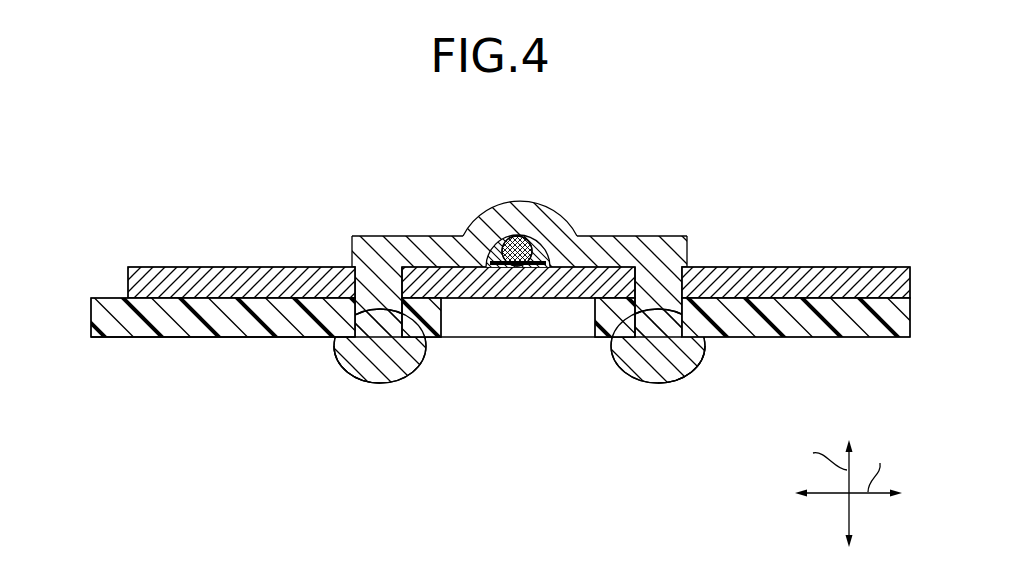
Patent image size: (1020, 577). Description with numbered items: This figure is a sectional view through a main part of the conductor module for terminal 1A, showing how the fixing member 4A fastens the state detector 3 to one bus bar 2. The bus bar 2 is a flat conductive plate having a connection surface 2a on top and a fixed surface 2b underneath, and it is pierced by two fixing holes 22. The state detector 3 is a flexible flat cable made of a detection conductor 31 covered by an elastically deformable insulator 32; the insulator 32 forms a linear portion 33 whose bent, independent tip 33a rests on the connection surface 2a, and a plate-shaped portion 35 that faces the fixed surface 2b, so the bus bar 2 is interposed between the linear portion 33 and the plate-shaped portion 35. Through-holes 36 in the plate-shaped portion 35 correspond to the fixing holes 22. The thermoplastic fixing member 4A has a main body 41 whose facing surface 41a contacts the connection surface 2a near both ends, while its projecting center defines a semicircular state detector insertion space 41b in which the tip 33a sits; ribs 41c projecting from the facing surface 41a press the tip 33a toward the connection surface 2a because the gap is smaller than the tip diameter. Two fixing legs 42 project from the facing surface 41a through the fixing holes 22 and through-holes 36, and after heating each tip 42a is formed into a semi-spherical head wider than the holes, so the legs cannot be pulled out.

The conductor module for terminal 1A is at (241, 150).
The bus bar 2 is at (197, 258).
The connection surface 2a is at (785, 265).
The fixed surface 2b is at (843, 300).
The state detector 3 is at (223, 297).
The fixing member 4A is at (519, 237).
The fixing hole 22 is at (358, 275).
The detection conductor 31 is at (508, 230).
The insulator 32 is at (114, 348).
The linear portion 33 is at (532, 255).
The tip of the linear portion 33a is at (520, 230).
The plate-shaped portion 35 is at (178, 320).
The through-hole 36 is at (372, 315).
The main body 41 is at (481, 227).
The facing surface 41a is at (466, 268).
The state detector insertion space 41b is at (532, 268).
The rib 41c is at (547, 233).
The fixing leg 42 is at (412, 310).
The tip of the fixing leg 42a is at (340, 356).